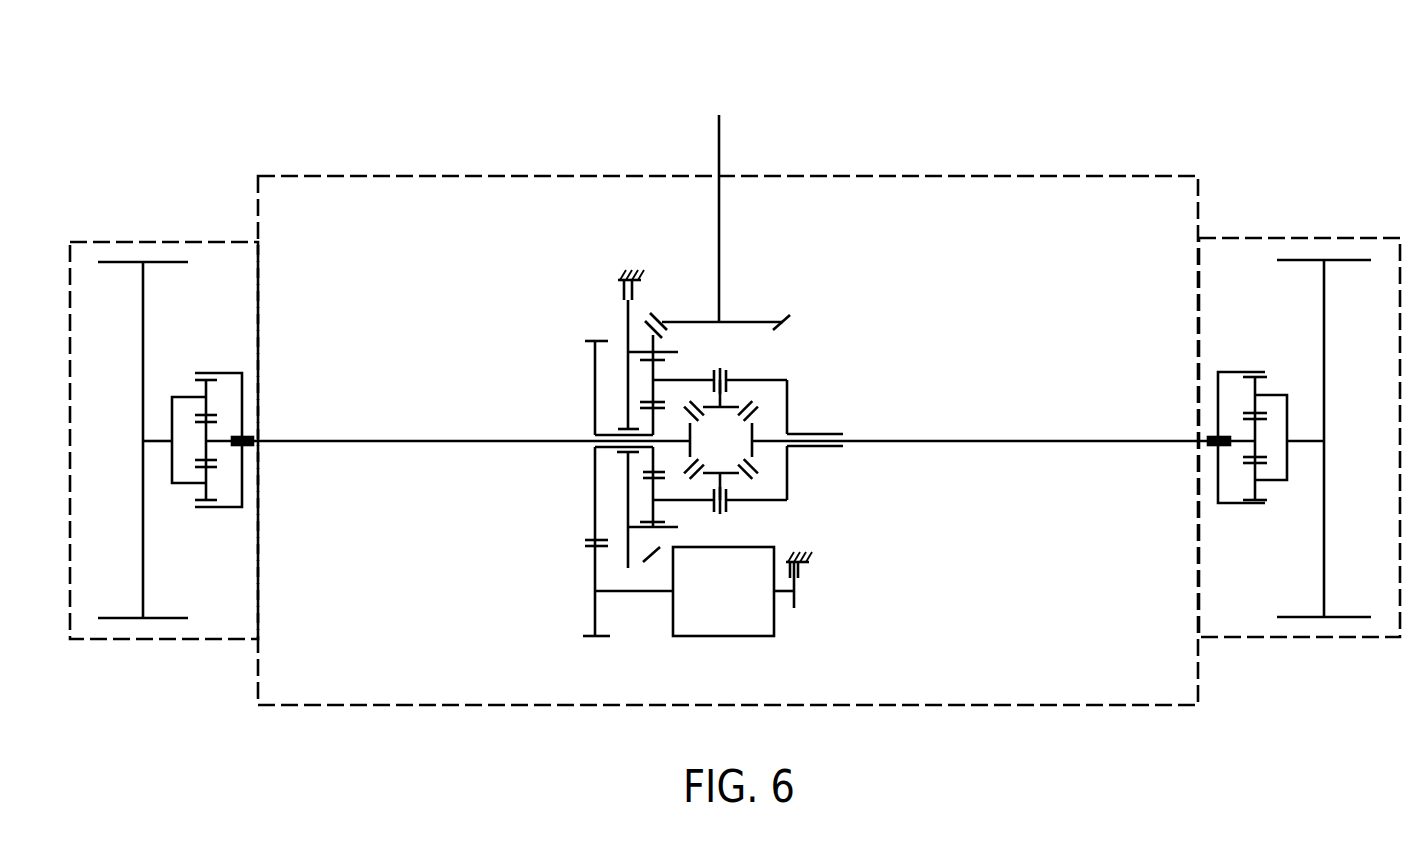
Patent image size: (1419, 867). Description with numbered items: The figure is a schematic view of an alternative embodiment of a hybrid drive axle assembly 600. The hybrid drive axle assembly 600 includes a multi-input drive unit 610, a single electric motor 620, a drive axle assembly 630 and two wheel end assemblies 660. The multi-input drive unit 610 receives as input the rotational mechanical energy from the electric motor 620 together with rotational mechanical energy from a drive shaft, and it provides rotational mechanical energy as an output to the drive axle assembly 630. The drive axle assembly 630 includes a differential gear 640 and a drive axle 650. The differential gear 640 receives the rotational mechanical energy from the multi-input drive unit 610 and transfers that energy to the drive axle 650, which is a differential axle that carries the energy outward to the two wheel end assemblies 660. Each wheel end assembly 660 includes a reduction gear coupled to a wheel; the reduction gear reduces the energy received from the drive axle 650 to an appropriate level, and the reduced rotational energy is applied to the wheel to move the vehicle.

The hybrid drive axle assembly 600 is at (1138, 125).
The multi-input drive unit 610 is at (588, 340).
The electric motor 620 is at (774, 623).
The drive axle assembly 630 is at (835, 457).
The differential gear 640 is at (787, 380).
The drive axle 650 is at (942, 437).
The wheel end assembly 660 is at (142, 639).